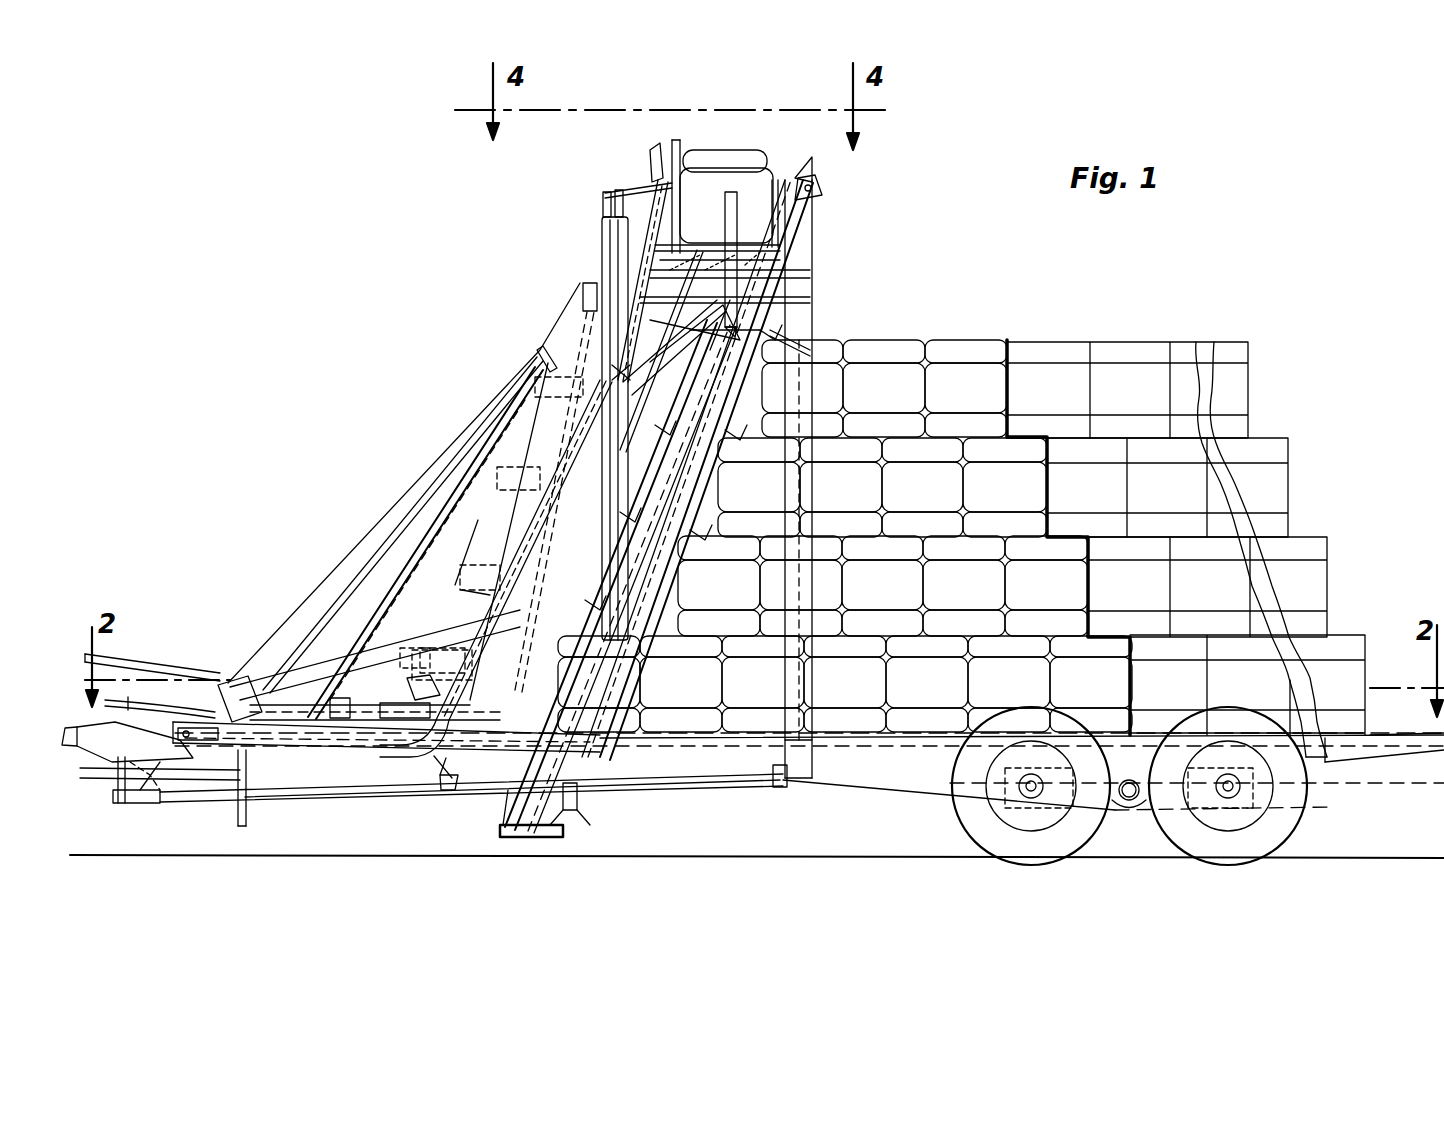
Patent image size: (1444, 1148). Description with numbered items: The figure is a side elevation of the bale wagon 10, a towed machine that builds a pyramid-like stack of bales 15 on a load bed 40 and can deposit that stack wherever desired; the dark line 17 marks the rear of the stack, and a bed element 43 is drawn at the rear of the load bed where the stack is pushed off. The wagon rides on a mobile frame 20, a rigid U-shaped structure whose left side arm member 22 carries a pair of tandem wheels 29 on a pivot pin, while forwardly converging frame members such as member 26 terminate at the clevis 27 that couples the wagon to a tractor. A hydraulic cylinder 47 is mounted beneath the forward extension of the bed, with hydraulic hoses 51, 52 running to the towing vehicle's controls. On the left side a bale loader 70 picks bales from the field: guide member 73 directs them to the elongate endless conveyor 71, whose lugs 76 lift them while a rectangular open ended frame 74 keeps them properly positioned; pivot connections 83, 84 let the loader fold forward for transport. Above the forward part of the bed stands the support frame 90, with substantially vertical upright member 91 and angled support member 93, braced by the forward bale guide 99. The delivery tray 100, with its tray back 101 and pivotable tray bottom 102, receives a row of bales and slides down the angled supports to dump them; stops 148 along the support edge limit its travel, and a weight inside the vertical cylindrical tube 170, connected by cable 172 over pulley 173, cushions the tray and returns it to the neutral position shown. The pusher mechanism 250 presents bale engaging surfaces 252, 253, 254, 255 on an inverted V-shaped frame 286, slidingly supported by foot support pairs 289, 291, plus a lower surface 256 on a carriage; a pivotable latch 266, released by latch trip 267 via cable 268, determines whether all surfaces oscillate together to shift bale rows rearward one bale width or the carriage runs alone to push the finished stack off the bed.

The bale wagon 10 is at (365, 272).
The stack of bales 15 is at (1092, 325).
The dark line (rear of stack) 17 is at (1007, 340).
The mobile frame 20 is at (848, 805).
The left side arm member 22 is at (915, 780).
The forwardly converging frame member 26 is at (350, 785).
The clevis 27 is at (142, 803).
The tandem wheels 29 is at (972, 838).
The load bed 40 is at (1412, 758).
The tailgate pivot 43 is at (1420, 735).
The hydraulic cylinder 47 is at (278, 745).
The hydraulic hose 51 is at (148, 698).
The hydraulic hose 52 is at (168, 712).
The bale loader 70 is at (795, 322).
The endless conveyor 71 is at (555, 822).
The guide member 73 is at (415, 797).
The rectangular open ended frame 74 is at (555, 590).
The lugs 76 is at (575, 805).
The pivot connection 83 is at (775, 785).
The pivot connection 84 is at (798, 325).
The support frame 90 is at (825, 262).
The upright support member 91 is at (810, 755).
The angled support member 93 is at (442, 780).
The forward bale guide 99 is at (665, 145).
The delivery tray 100 is at (640, 158).
The tray back 101 is at (615, 190).
The pivotable tray bottom 102 is at (717, 248).
The stops 148 is at (540, 352).
The vertical cylindrical tube 170 is at (600, 238).
The cable 172 is at (655, 178).
The pulley 173 is at (600, 197).
The pusher mechanism 250 is at (310, 560).
The bale engaging surface 252 is at (622, 372).
The bale engaging surface 253 is at (520, 480).
The bale engaging surface 254 is at (470, 595).
The bale engaging surface 255 is at (512, 630).
The bale engaging surface 256 is at (465, 712).
The pivotable latch 266 is at (360, 703).
The latch trip 267 is at (260, 685).
The cable 268 is at (118, 668).
The inverted V-shaped frame 286 is at (465, 553).
The slidable foot support pair 289 is at (395, 640).
The slidable foot support pair 291 is at (470, 652).